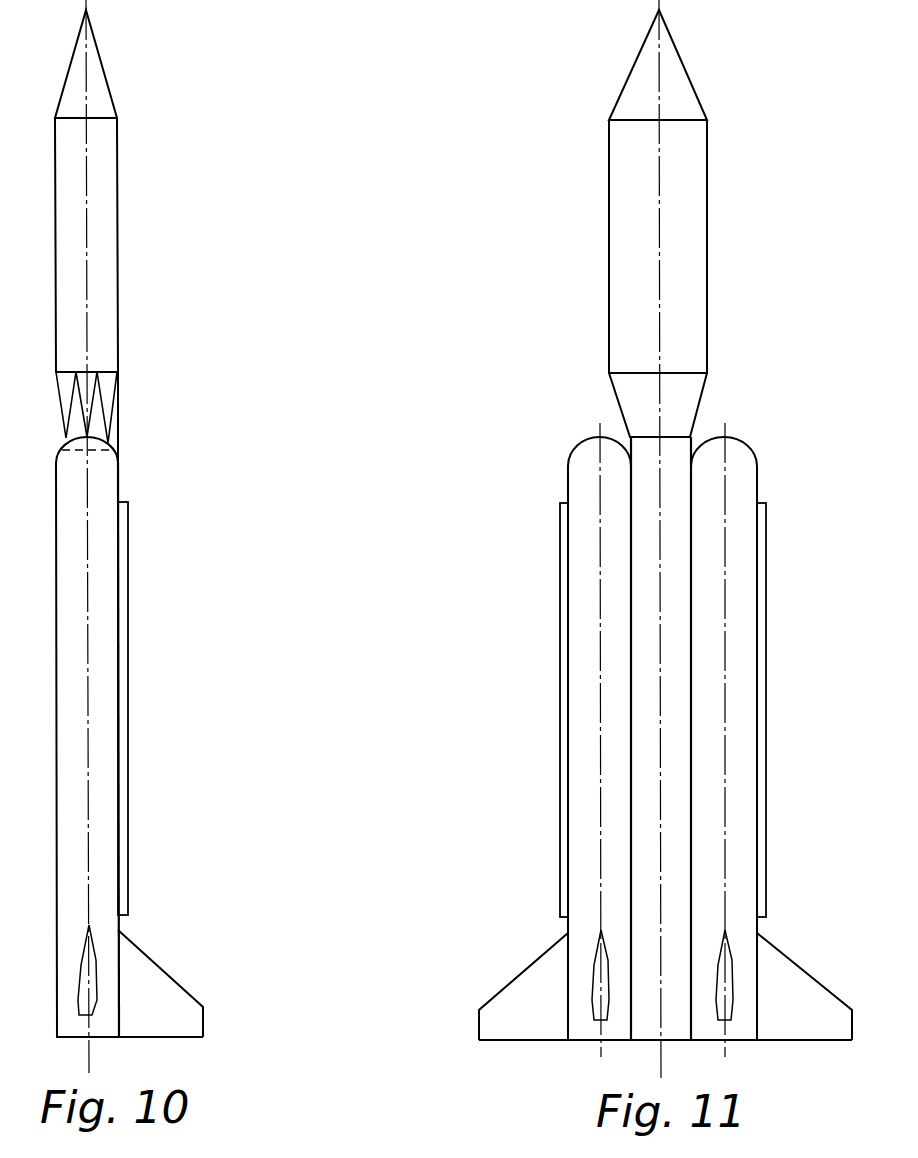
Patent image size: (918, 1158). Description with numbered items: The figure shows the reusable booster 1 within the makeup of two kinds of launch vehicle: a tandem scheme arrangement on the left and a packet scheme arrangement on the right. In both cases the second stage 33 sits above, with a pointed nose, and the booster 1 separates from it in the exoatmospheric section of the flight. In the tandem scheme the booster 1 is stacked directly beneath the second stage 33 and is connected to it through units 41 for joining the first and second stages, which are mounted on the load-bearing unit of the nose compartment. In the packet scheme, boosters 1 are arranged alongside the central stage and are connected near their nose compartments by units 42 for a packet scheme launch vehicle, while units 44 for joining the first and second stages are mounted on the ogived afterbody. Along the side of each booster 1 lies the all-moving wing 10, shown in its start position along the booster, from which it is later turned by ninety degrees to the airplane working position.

In FIG. 10, the second stage 33 is at (103, 161).
In FIG. 11, the second stage 33 is at (620, 168).
In FIG. 10, the units for joining the first and second stages of the tandem scheme launch vehicl 41 is at (110, 446).
In FIG. 10, the reusable booster 1 is at (105, 645).
In FIG. 11, the reusable booster 1 is at (712, 636).
In FIG. 10, the all-moving wing 10 is at (123, 817).
In FIG. 11, the all-moving wing 10 is at (758, 771).
In FIG. 11, the units for joining the stages of a packet scheme launch vehicle 42 is at (688, 493).
In FIG. 11, the units for joining the first and second stages of the packet scheme launch vehicl 44 is at (690, 1000).